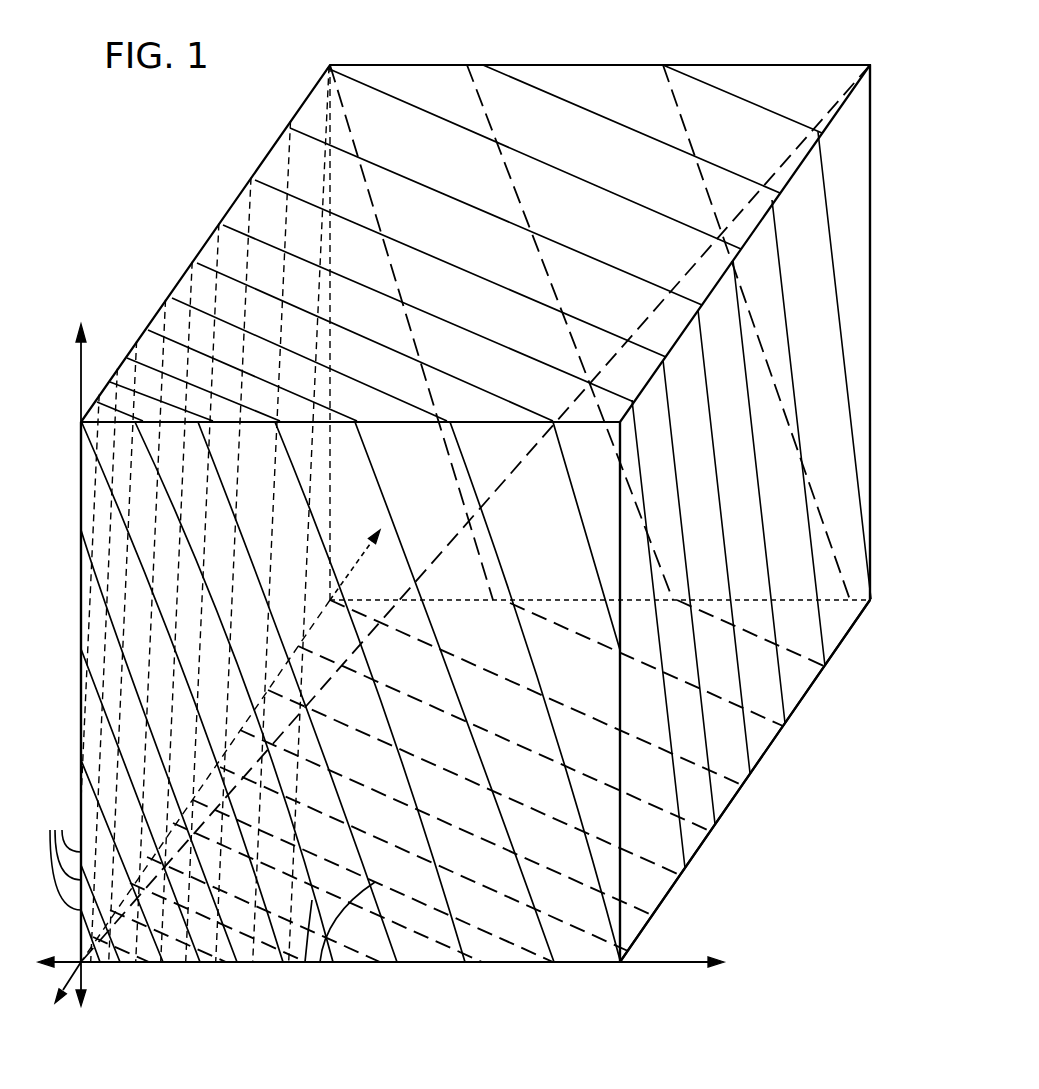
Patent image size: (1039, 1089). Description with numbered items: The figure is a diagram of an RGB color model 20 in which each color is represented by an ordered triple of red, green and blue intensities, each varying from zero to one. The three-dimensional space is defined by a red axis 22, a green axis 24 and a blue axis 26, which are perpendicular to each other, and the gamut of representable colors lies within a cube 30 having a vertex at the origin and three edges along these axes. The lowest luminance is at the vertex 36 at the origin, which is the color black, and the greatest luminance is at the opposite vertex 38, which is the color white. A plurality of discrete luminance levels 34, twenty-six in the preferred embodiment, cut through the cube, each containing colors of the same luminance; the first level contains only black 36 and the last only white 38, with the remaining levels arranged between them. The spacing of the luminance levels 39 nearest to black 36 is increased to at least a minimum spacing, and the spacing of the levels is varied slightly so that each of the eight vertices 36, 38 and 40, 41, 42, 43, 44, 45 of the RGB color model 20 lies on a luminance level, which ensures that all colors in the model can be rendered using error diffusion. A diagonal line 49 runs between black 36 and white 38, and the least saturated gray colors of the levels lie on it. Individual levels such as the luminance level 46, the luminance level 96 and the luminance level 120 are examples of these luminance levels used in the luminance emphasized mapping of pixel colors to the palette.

The RGB color model 20 is at (185, 198).
The red axis 22 is at (503, 962).
The green axis 24 is at (262, 705).
The blue axis 26 is at (78, 628).
The cube 30 is at (807, 690).
The discrete luminance levels 34 is at (318, 963).
The vertex (black) 36 is at (85, 965).
The opposite vertex (white) 38 is at (871, 66).
The luminance levels nearest to black 39 is at (61, 856).
The vertex of the RGB color model 40 is at (80, 419).
The vertex of the RGB color model 41 is at (330, 62).
The vertex of the RGB color model 42 is at (355, 587).
The vertex of the RGB color model 43 is at (870, 600).
The vertex of the RGB color model 44 is at (620, 962).
The vertex of the RGB color model 45 is at (618, 427).
The luminance level 46 is at (712, 829).
The diagonal line 49 is at (687, 273).
The luminance level 96 is at (682, 873).
The luminance level 120 is at (655, 912).